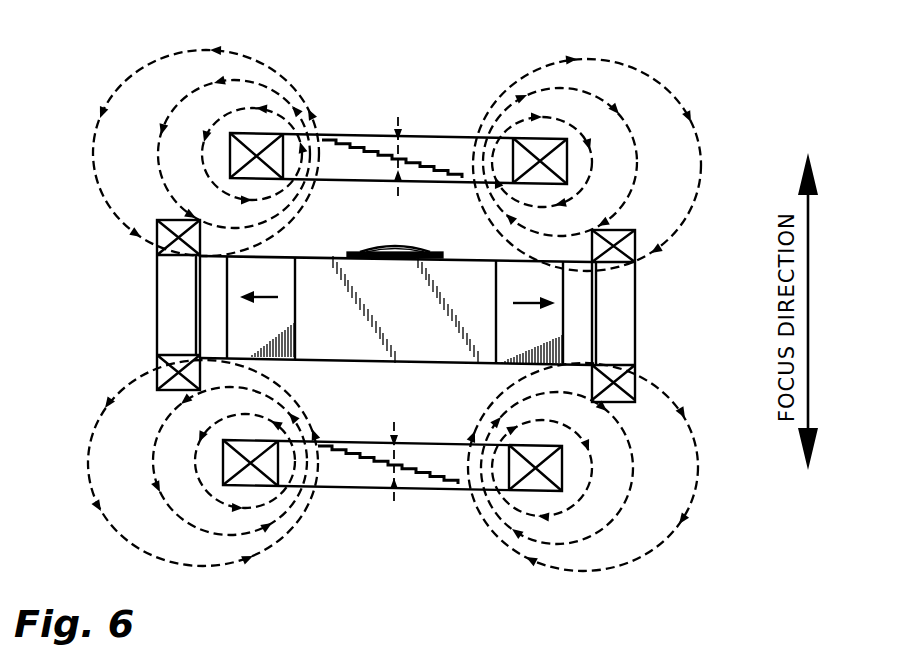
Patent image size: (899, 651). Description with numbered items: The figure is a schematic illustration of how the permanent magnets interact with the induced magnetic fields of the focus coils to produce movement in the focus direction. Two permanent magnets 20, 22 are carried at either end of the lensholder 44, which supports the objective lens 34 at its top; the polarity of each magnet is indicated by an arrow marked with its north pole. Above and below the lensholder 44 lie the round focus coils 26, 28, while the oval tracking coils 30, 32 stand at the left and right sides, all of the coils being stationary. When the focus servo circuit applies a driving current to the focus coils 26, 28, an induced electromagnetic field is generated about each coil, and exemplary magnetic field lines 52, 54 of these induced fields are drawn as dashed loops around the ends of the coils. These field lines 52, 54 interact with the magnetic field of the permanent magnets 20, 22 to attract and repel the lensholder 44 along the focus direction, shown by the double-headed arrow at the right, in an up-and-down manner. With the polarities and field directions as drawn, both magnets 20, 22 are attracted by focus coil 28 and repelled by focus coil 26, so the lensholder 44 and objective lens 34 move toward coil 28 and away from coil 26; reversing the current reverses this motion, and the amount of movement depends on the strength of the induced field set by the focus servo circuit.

The permanent magnet 20 is at (262, 335).
The permanent magnet 22 is at (535, 350).
The focus coil 26 is at (425, 130).
The focus coil 28 is at (350, 493).
The tracking coil 30 is at (150, 292).
The tracking coil 32 is at (646, 302).
The objective lens 34 is at (425, 255).
The lensholder 44 is at (405, 322).
The magnetic field lines 52 is at (243, 50).
The magnetic field lines 54 is at (272, 545).